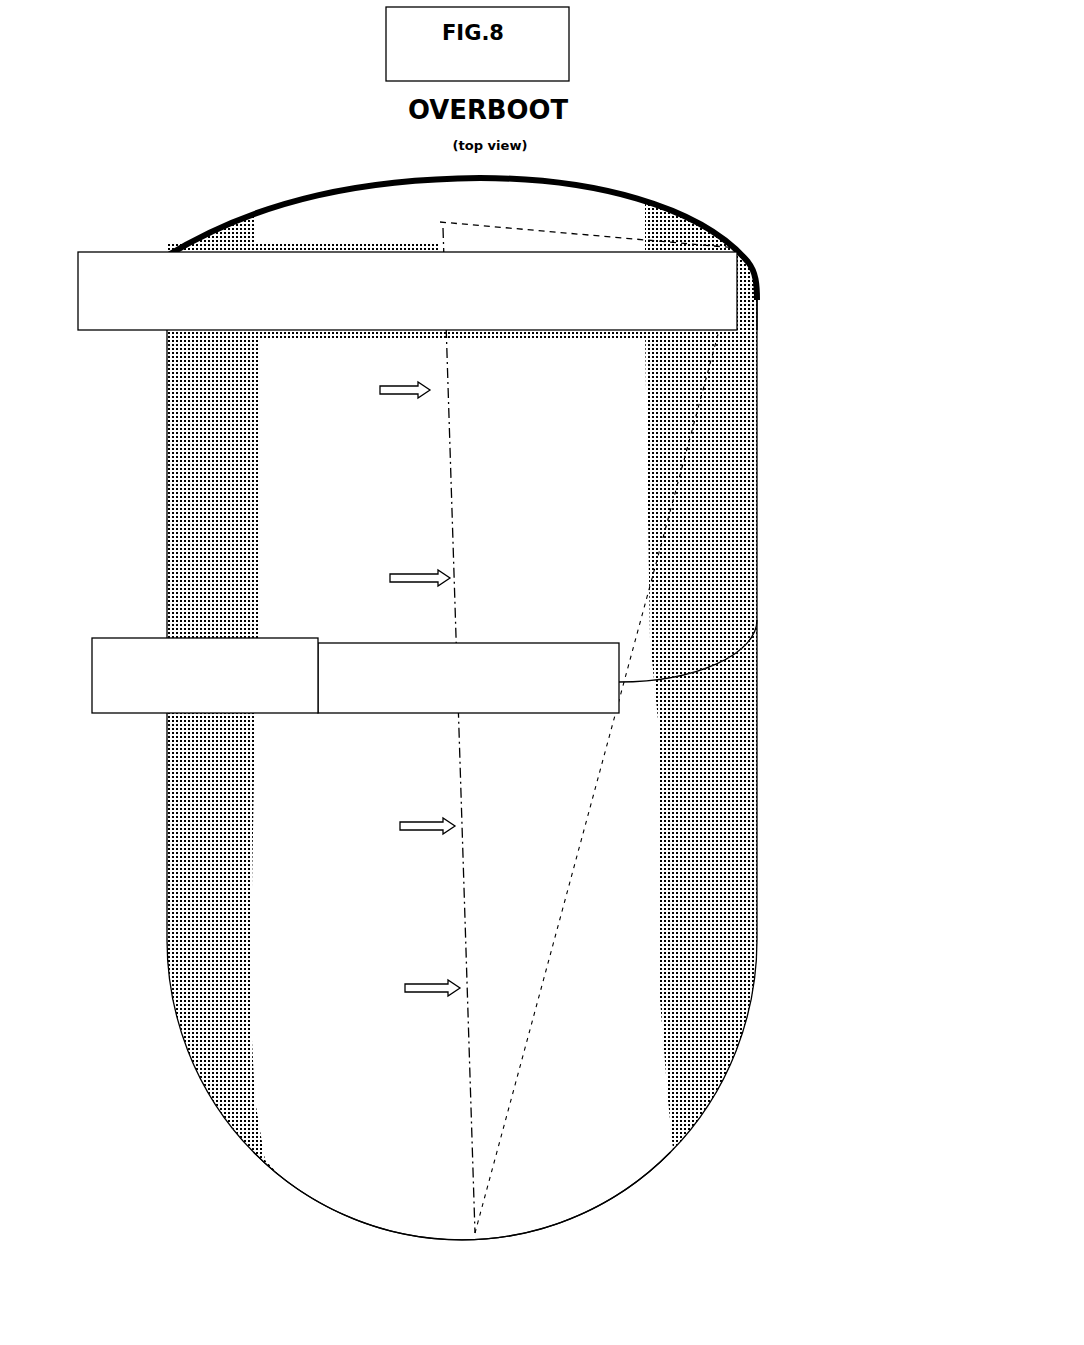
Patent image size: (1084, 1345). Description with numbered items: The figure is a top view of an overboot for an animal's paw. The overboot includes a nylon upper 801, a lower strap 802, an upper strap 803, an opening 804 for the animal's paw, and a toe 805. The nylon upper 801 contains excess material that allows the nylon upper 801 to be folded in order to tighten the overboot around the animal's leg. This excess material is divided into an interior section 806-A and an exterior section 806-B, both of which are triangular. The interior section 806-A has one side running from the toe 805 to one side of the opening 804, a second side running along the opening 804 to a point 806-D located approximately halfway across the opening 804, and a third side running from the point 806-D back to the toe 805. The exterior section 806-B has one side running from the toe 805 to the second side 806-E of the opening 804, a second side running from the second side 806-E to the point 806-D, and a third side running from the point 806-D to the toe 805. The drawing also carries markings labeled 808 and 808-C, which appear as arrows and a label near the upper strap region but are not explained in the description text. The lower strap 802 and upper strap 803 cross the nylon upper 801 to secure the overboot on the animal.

The nylon upper 801 is at (683, 830).
The lower strap 802 is at (157, 633).
The upper strap 803 is at (562, 678).
The opening 804 is at (548, 207).
The toe 805 is at (563, 1226).
The interior section 806-A is at (405, 730).
The exterior section 806-B is at (597, 780).
The point 806-D is at (573, 220).
The second side of the opening 806-E is at (788, 294).
The direction arrows 808 is at (375, 403).
The upper strap 808-C is at (165, 252).